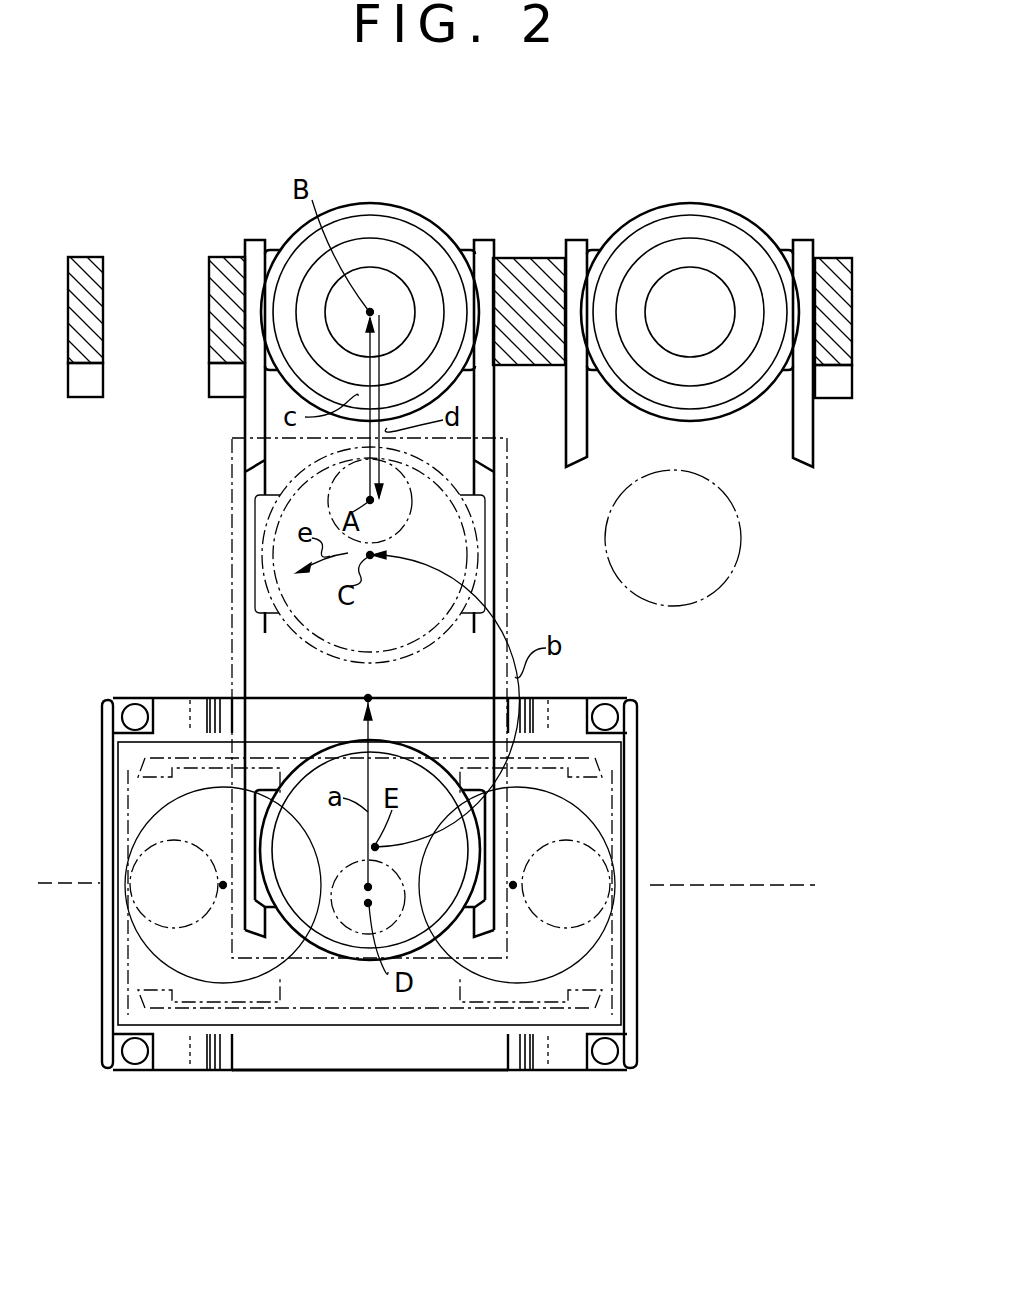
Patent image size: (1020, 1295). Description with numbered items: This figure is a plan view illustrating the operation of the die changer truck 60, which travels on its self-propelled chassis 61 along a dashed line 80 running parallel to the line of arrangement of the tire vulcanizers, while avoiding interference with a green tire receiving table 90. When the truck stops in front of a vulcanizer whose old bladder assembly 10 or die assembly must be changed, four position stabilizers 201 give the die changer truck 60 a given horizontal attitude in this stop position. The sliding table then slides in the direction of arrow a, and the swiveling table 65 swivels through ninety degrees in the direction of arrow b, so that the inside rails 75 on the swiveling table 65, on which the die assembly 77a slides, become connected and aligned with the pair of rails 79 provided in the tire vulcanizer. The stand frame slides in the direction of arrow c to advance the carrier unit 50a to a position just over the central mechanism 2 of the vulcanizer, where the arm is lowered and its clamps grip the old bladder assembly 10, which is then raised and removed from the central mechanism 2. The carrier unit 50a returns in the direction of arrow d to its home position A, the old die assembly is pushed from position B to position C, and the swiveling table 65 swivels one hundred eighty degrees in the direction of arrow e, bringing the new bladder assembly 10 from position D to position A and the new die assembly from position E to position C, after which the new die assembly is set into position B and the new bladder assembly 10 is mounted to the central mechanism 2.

The bladder assembly 10 is at (241, 229).
The central mechanism 2 is at (392, 282).
The rails 79 is at (245, 418).
The inside rails 75 is at (245, 480).
The carrier unit 50a is at (414, 512).
The swiveling table 65 is at (233, 570).
The die assembly 77a is at (484, 583).
The green tire receiving table 90 is at (690, 605).
The die changer truck 60 is at (101, 993).
The self-propelled chassis 61 is at (403, 1070).
The position stabilizers 201 is at (136, 704).
The dashed line 80 is at (750, 887).